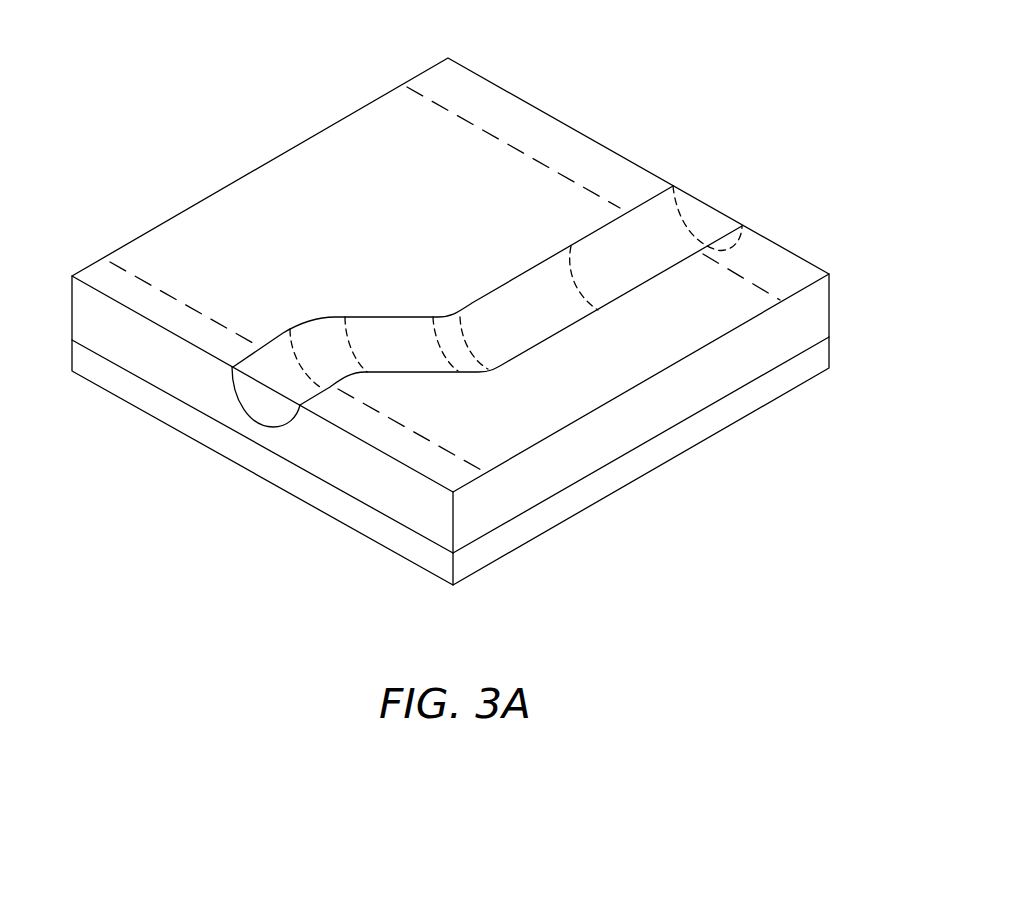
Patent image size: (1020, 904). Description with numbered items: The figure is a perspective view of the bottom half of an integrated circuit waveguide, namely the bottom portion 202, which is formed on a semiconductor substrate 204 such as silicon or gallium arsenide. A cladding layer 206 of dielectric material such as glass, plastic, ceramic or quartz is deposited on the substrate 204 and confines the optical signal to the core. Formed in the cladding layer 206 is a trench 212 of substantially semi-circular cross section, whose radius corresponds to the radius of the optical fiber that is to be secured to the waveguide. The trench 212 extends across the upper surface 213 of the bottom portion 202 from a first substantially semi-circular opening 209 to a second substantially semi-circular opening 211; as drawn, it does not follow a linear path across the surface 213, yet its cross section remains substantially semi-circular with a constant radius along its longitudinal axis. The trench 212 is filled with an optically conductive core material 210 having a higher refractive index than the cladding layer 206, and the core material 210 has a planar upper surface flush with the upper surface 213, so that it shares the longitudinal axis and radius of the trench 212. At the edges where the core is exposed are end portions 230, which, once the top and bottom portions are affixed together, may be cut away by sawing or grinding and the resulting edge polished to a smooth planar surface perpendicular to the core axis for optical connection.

The bottom portion 202 is at (501, 321).
The semiconductor substrate 204 is at (830, 359).
The cladding layer 206 is at (830, 313).
The first substantially semi-circular opening 209 is at (273, 427).
The core material 210 is at (497, 333).
The second substantially semi-circular opening 211 is at (697, 207).
The trench 212 is at (571, 248).
The upper surface 213 is at (420, 225).
The end portions 230 is at (97, 273).